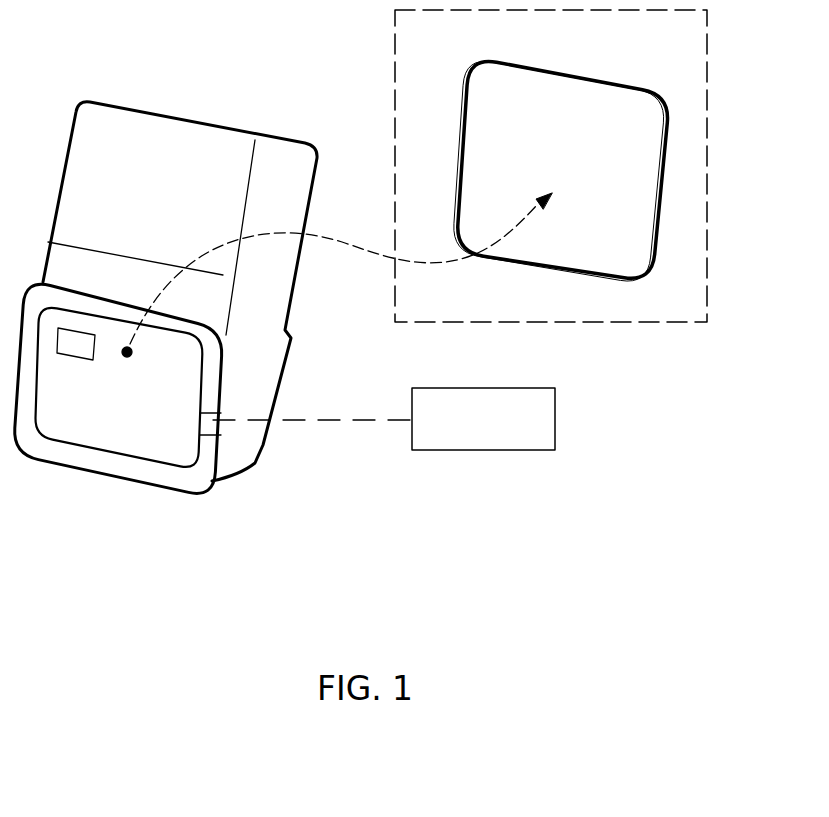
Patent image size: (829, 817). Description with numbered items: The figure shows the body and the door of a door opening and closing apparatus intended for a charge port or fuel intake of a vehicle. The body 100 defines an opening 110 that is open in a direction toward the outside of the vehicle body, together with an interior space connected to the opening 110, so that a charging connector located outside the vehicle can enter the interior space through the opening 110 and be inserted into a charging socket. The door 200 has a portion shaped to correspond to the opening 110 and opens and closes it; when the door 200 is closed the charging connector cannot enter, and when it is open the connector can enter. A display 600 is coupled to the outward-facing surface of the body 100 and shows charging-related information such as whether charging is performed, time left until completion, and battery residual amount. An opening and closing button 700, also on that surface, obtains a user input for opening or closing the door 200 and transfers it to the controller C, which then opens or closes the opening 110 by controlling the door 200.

The body 100 is at (567, 301).
The opening 110 is at (607, 178).
The door 200 is at (163, 391).
The display 600 is at (75, 349).
The opening and closing button 700 is at (219, 426).
The controller C is at (480, 453).